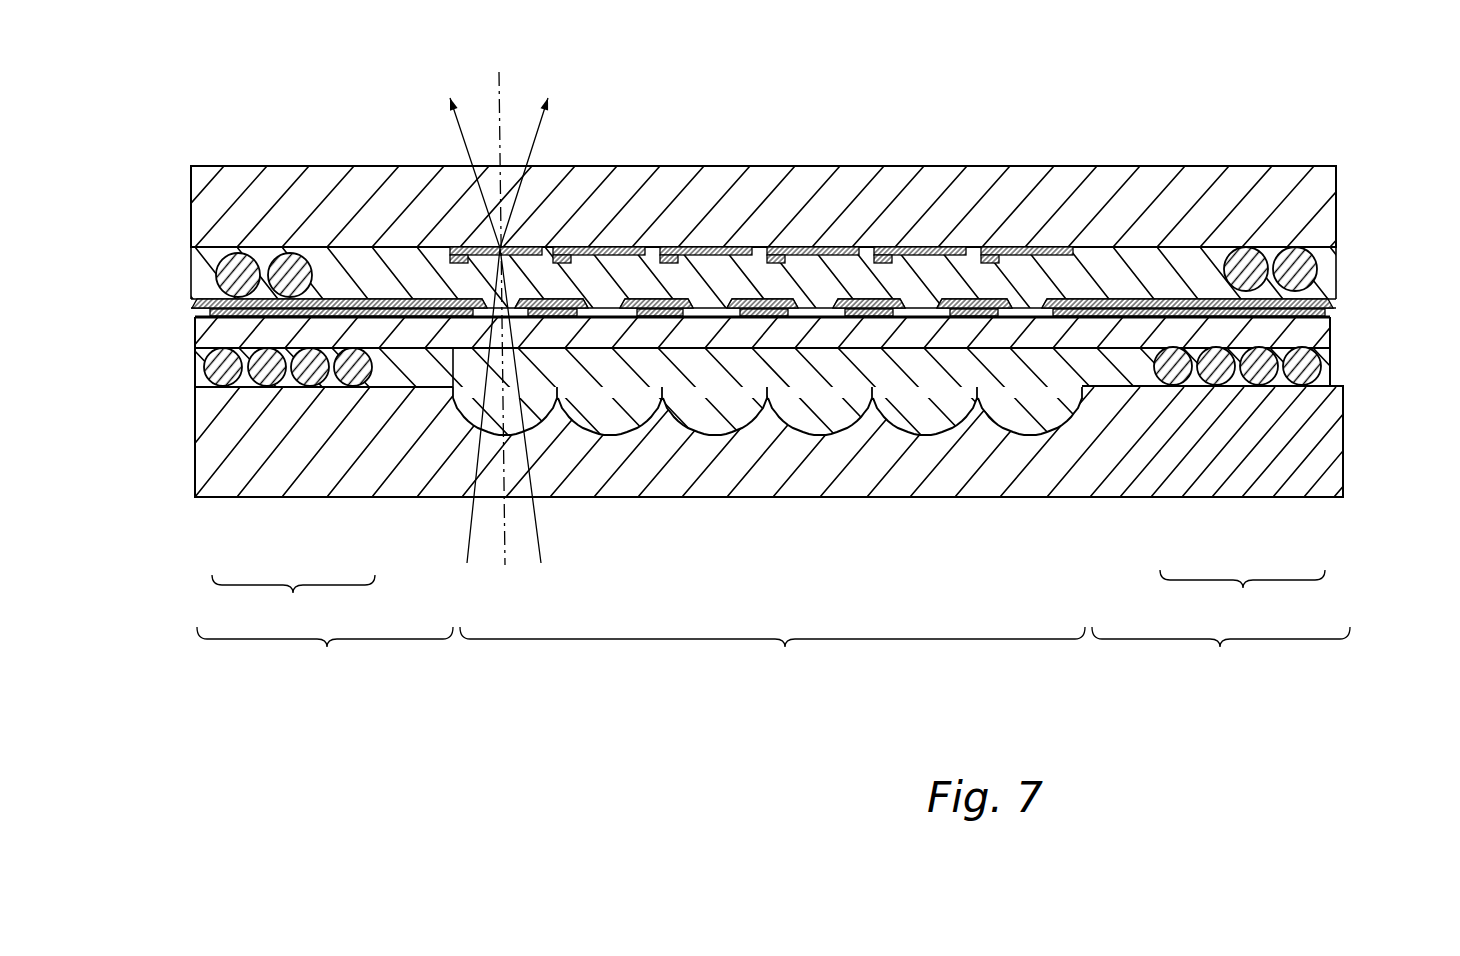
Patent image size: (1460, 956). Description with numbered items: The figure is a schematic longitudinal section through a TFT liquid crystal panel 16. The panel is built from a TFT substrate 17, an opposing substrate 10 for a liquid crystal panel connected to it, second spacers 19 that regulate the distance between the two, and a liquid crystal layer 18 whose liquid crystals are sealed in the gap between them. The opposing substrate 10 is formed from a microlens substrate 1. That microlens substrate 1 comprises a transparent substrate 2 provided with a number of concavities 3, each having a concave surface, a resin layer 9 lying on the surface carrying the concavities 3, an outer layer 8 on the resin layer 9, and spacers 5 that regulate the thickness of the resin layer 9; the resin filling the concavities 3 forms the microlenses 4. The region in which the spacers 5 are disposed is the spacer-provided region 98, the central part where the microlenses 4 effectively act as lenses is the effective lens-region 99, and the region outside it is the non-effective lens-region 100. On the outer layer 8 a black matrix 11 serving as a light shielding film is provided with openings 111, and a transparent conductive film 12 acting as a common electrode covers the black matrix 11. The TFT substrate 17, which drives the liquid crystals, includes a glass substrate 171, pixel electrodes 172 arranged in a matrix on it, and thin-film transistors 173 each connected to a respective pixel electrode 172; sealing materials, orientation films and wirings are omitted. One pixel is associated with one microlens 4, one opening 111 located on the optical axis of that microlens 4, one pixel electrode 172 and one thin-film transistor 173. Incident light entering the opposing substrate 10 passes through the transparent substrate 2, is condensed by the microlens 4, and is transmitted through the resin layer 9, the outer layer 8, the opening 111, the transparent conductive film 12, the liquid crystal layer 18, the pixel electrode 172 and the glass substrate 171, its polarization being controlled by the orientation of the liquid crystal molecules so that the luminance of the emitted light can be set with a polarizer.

The microlens substrate 1 is at (785, 449).
The transparent substrate 2 is at (1325, 458).
The concavities 3 is at (927, 440).
The microlenses 4 is at (794, 449).
The spacers 5 is at (1296, 385).
The outer layer 8 is at (1330, 340).
The resin layer 9 is at (1330, 368).
The opposing substrate for a liquid crystal panel 10 is at (308, 498).
The black matrix 11 is at (835, 450).
The openings 111 is at (1027, 317).
The transparent conductive film 12 is at (1330, 303).
The liquid crystal panel 16 is at (779, 314).
The TFT substrate 17 is at (771, 190).
The glass substrate 171 is at (1330, 212).
The pixel electrodes 172 is at (925, 248).
The thin-film transistors 173 is at (772, 248).
The liquid crystal layer 18 is at (202, 278).
The second spacers 19 is at (1297, 265).
The spacer-provided region 98 is at (768, 595).
The effective lens-region 99 is at (772, 652).
The non-effective lens-region 100 is at (773, 652).